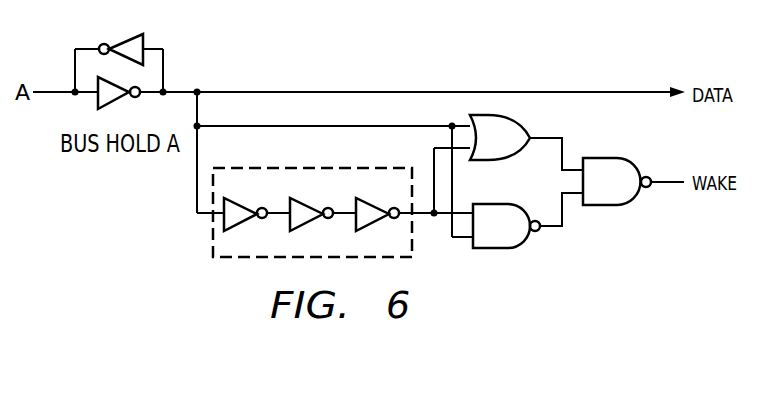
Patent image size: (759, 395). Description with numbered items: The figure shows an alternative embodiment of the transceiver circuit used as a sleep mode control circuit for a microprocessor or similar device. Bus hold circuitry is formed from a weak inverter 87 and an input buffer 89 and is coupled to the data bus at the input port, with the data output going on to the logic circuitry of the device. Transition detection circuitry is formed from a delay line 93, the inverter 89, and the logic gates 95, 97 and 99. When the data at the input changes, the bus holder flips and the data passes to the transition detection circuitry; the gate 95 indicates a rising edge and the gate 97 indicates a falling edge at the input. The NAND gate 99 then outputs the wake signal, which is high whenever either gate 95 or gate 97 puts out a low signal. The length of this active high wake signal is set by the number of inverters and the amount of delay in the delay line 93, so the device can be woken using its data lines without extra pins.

The weak inverter 87 is at (145, 40).
The input buffer 89 is at (95, 104).
The delay line 93 is at (200, 245).
The NAND gate 95 is at (519, 151).
The NAND gate 97 is at (492, 249).
The NAND gate 99 is at (606, 158).